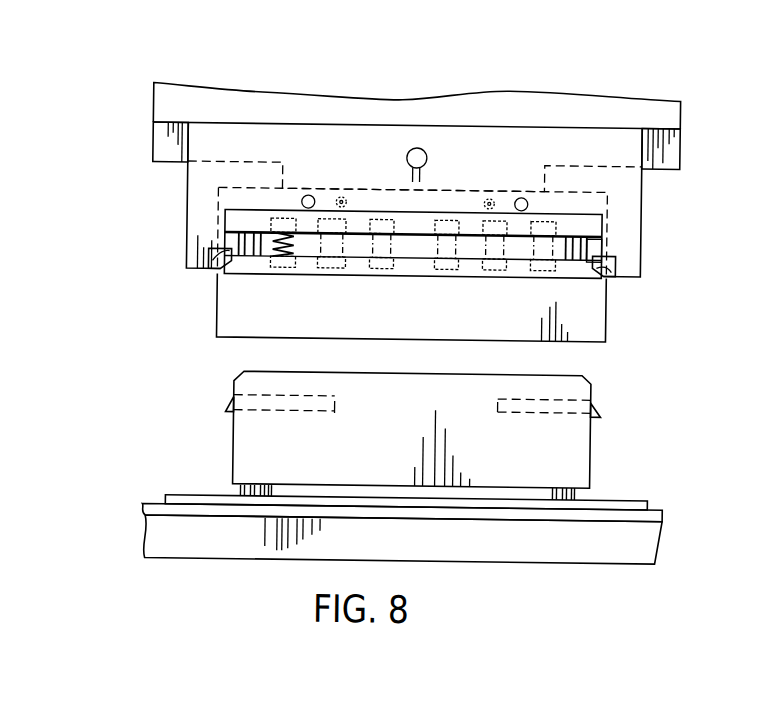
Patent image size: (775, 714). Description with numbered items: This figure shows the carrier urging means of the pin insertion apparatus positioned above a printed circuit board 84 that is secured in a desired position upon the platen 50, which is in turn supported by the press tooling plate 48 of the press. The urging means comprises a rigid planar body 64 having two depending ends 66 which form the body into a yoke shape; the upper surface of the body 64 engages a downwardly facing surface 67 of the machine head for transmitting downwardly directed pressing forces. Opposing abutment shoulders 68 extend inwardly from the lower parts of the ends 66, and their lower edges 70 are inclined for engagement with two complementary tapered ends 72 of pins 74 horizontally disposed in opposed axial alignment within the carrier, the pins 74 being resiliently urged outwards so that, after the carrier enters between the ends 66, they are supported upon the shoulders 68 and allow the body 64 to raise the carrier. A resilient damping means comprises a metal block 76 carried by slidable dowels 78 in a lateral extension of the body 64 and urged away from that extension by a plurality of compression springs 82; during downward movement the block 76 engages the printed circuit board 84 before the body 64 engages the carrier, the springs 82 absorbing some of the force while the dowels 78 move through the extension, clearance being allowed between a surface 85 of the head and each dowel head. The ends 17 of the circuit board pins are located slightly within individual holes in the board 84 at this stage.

The end portion 17 is at (578, 495).
The press tooling plate 48 is at (640, 541).
The platen 50 is at (146, 512).
The rigid planar body 64 is at (207, 179).
The depending ends 66 is at (203, 233).
The downwardly facing surface 67 is at (174, 126).
The abutment shoulders 68 is at (208, 265).
The lower edges of the shoulders 70 is at (597, 274).
The tapered ends 72 is at (228, 406).
The pins 74 is at (336, 412).
The metal block 76 is at (228, 326).
The slidable dowels 78 is at (247, 246).
The compression springs 82 is at (433, 250).
The printed circuit board 84 is at (188, 498).
The surface of the head 85 is at (168, 165).